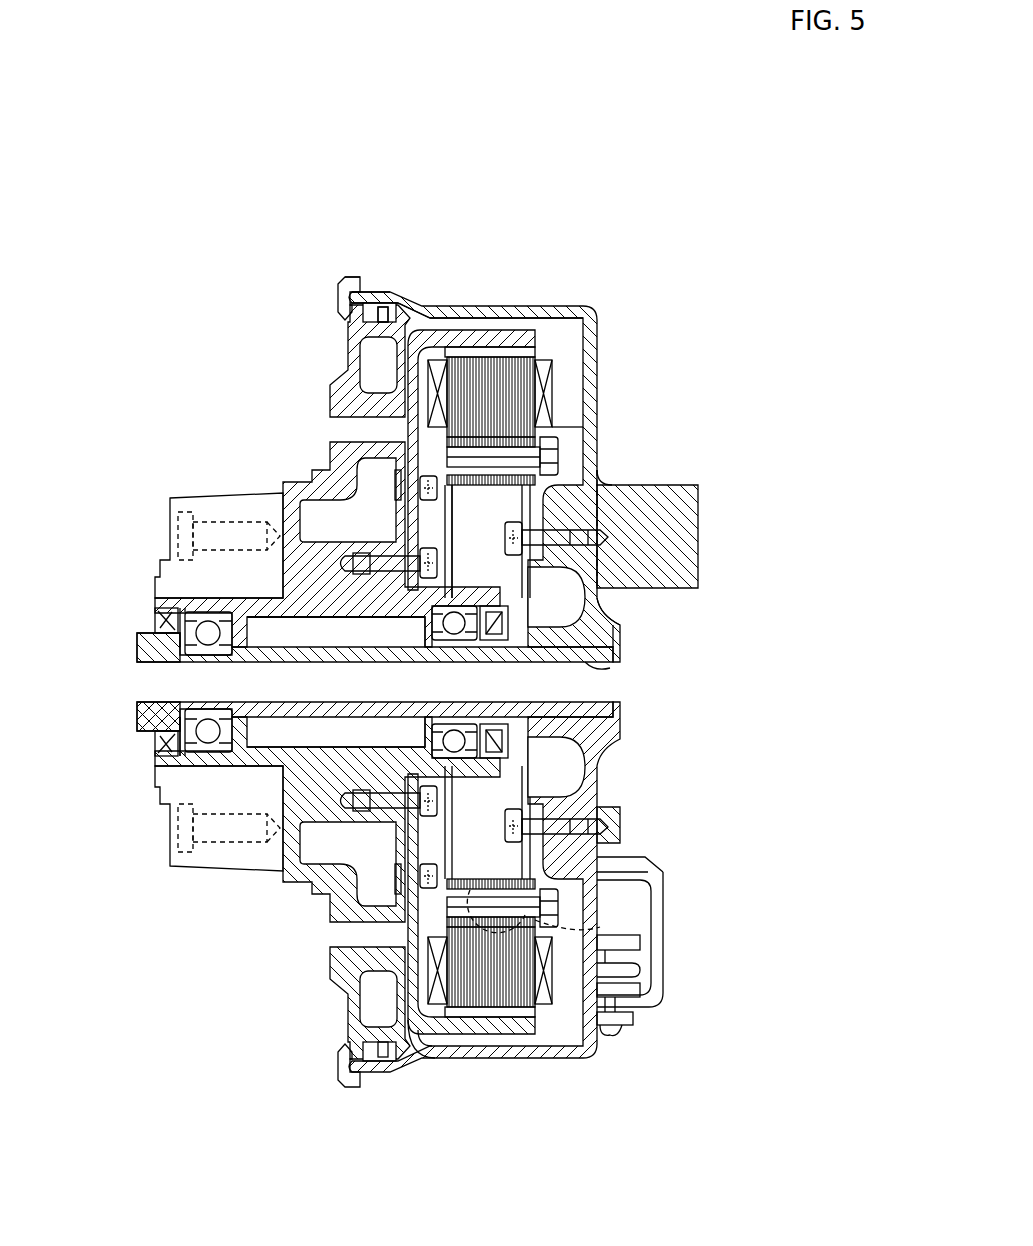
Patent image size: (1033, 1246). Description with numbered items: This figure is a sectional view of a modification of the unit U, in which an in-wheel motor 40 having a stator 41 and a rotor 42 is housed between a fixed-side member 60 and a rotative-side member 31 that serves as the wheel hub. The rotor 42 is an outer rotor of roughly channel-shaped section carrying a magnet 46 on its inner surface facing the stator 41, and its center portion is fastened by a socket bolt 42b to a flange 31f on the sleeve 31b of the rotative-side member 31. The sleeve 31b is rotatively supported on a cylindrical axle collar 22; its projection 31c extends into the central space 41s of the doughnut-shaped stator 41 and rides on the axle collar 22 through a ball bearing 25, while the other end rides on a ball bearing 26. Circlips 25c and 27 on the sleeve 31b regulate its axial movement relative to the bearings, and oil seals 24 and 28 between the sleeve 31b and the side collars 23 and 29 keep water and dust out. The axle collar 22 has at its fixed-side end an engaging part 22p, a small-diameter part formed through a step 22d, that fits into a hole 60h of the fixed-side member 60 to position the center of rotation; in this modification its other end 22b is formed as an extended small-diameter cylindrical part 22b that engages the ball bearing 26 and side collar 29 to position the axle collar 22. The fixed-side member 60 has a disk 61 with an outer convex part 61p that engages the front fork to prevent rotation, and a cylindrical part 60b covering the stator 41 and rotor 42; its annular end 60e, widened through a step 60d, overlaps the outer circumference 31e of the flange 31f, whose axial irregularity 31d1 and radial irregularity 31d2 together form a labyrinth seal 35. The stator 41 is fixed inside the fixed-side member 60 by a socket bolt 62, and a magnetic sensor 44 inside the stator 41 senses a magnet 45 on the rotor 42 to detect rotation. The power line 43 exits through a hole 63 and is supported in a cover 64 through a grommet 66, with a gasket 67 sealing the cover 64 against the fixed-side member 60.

The unit U is at (176, 370).
The annular end 60e is at (373, 290).
The axially-extending ring-shaped irregularity 31d1 is at (352, 276).
The radially-extending irregularity 31d2 is at (398, 305).
The outer circumference of the flange 31e is at (336, 284).
The step 60d is at (418, 303).
The cylindrical part 60b is at (505, 306).
The rotor 42 is at (553, 320).
The magnet 46 is at (537, 348).
The motor 40 is at (569, 359).
The stator 41 is at (552, 395).
The fixed-side member 60 is at (602, 420).
The labyrinth seal 35 is at (350, 321).
The flange 31f is at (350, 370).
The wheel hub (rotative-side member) 31 is at (163, 502).
The magnet 45 is at (420, 490).
The socket bolt 42b is at (390, 565).
The magnetic sensor 44 is at (455, 508).
The projection 31c is at (515, 572).
The convex part 61p is at (700, 495).
The space 41s is at (545, 575).
The oil seal 24 is at (488, 627).
The step 22d is at (545, 645).
The hole 60h is at (527, 660).
The engaging part 22p is at (593, 672).
The extended part 22b is at (175, 658).
The sleeve 31b is at (338, 605).
The ball bearing 25 is at (447, 640).
The axle collar 22 is at (478, 652).
The side collar 29 is at (140, 710).
The oil seal 28 is at (160, 742).
The circlip 27 is at (170, 758).
The ball bearing 26 is at (210, 743).
The side collar 23 is at (522, 725).
The circlip 25c is at (480, 757).
The disk 61 is at (593, 777).
The socket bolt 62 is at (555, 825).
The gasket 67 is at (600, 872).
The hole 63 is at (540, 913).
The cover 64 is at (657, 957).
The grommet 66 is at (618, 1005).
The power line 43 is at (618, 1035).